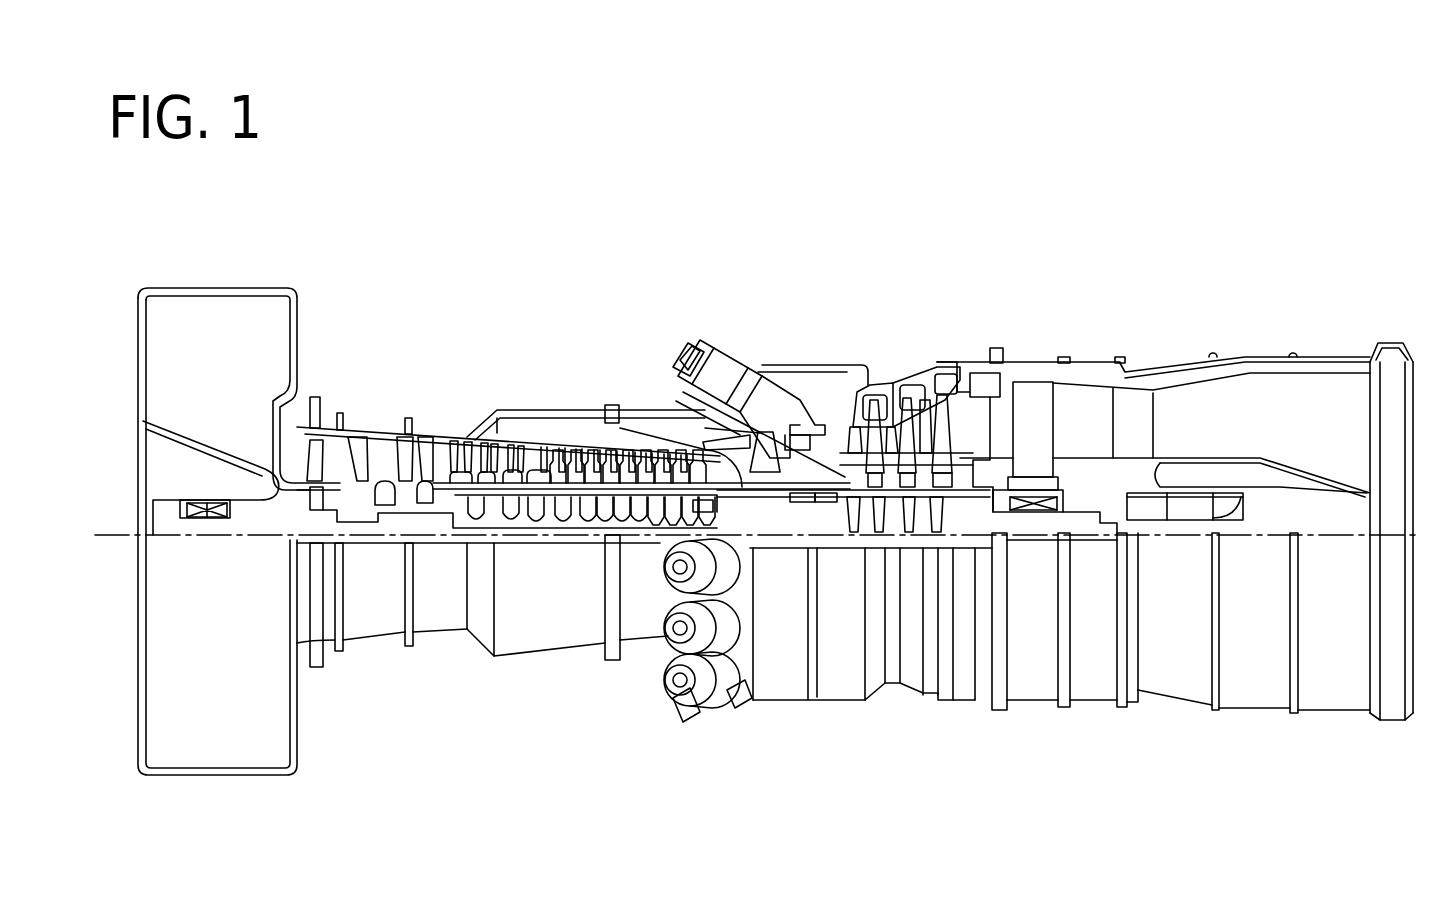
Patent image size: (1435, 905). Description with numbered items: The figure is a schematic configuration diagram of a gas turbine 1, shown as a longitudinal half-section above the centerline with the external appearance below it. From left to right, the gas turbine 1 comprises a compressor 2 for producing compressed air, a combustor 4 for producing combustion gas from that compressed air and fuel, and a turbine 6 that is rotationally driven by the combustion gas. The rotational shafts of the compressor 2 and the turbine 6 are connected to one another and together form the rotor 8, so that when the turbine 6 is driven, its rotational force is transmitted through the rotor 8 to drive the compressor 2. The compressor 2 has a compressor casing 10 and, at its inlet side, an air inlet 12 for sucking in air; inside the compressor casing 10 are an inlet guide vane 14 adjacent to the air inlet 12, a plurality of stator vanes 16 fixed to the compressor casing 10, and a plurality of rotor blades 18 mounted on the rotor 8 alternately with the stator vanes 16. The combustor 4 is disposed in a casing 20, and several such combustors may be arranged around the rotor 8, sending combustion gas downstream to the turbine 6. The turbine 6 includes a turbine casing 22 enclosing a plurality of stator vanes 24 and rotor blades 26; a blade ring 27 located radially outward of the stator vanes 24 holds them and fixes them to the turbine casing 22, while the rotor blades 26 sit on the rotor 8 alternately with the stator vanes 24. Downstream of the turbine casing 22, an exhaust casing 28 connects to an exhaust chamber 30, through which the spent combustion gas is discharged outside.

The gas turbine 1 is at (796, 240).
The compressor 2 is at (399, 350).
The combustor 4 is at (709, 334).
The turbine 6 is at (1003, 347).
The rotor 8 is at (740, 480).
The compressor casing 10 is at (386, 446).
The air inlet 12 is at (177, 380).
The inlet guide vane 14 is at (337, 456).
The stator vanes 16 is at (392, 460).
The rotor blades 18 is at (363, 446).
The casing 20 is at (700, 381).
The turbine casing 22 is at (934, 373).
The stator vanes 24 is at (874, 384).
The rotor blades 26 is at (857, 425).
The blade ring 27 is at (901, 373).
The exhaust casing 28 is at (1040, 357).
The exhaust chamber 30 is at (1327, 357).